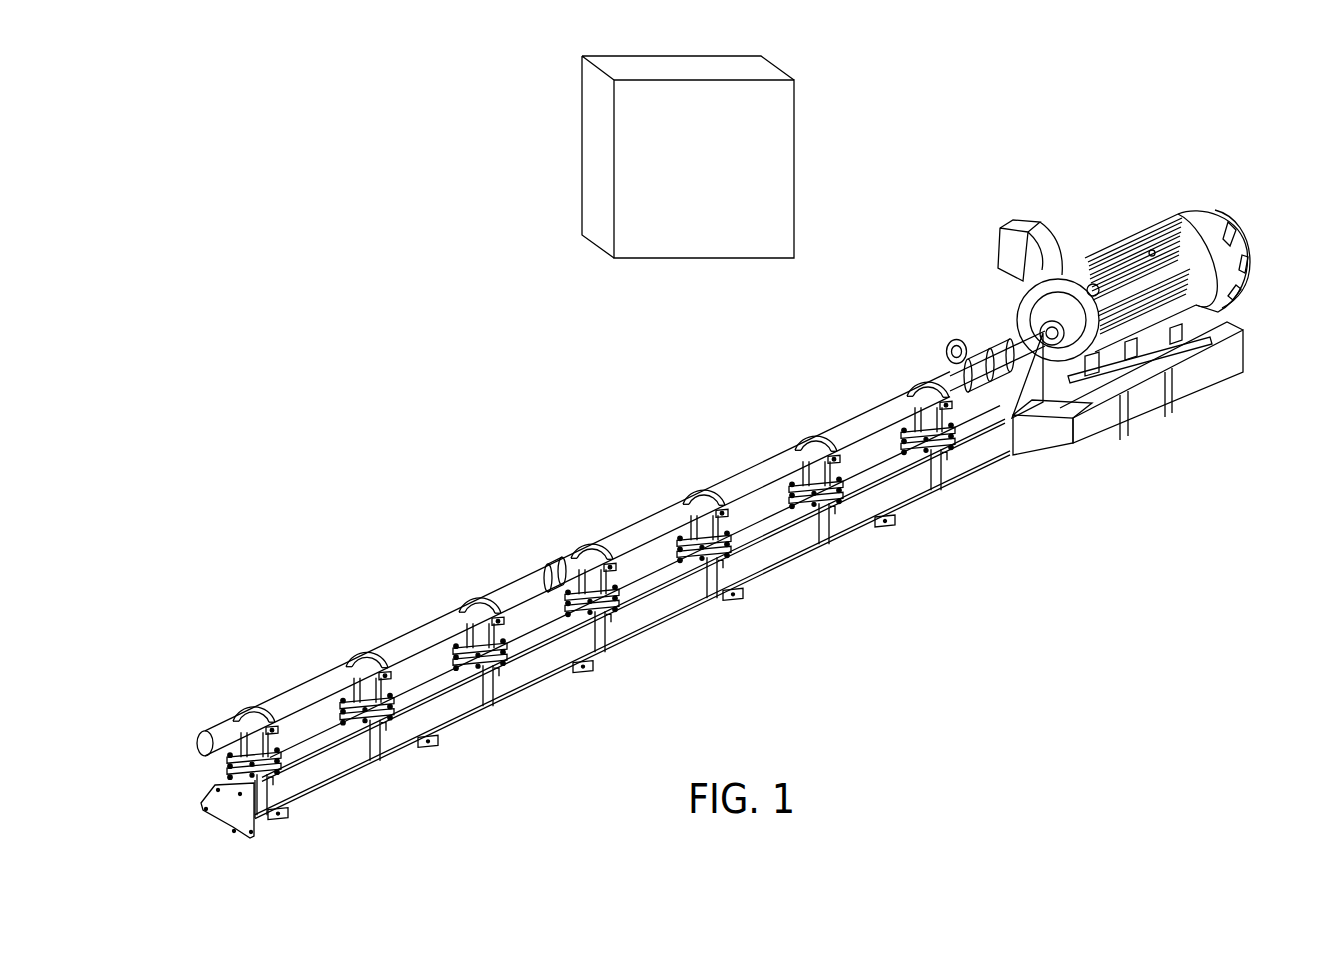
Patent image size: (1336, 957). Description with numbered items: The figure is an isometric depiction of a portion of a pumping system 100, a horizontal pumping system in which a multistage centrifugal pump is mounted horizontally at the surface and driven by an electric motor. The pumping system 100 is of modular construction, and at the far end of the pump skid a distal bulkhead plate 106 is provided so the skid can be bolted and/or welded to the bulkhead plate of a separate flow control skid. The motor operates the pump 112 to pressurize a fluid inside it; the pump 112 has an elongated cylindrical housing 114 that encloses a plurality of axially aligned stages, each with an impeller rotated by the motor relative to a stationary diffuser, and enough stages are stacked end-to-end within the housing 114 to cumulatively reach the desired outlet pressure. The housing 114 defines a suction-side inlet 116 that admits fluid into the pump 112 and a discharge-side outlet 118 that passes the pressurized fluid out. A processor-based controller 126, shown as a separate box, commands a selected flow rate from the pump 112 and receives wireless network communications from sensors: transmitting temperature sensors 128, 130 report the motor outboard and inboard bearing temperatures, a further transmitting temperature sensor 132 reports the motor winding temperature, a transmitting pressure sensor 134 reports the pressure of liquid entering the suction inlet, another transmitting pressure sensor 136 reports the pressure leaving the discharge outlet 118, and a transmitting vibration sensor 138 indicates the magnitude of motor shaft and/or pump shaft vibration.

The pumping system 100 is at (416, 212).
The distal bulkhead plate 106 is at (231, 818).
The pump 112 is at (549, 470).
The elongated cylindrical housing 114 is at (520, 577).
The suction-side inlet 116 is at (955, 330).
The discharge-side outlet 118 is at (209, 742).
The processor-based controller 126 is at (795, 168).
The transmitting temperature sensor 128 is at (1107, 348).
The transmitting temperature sensor 130 is at (1172, 284).
The transmitting temperature sensor 132 is at (1150, 318).
The transmitting pressure sensor 134 is at (946, 347).
The transmitting pressure sensor 136 is at (258, 787).
The transmitting vibration sensor 138 is at (1022, 300).